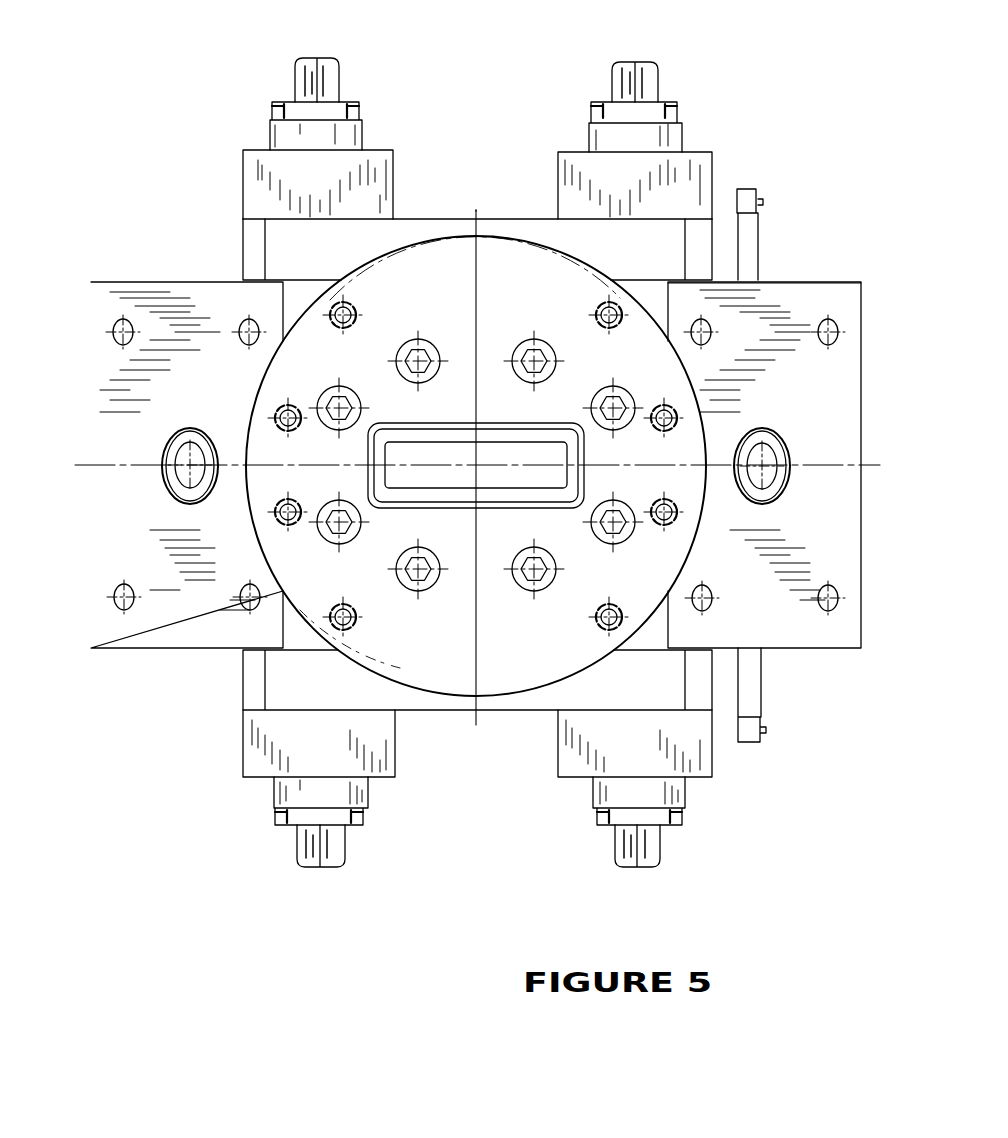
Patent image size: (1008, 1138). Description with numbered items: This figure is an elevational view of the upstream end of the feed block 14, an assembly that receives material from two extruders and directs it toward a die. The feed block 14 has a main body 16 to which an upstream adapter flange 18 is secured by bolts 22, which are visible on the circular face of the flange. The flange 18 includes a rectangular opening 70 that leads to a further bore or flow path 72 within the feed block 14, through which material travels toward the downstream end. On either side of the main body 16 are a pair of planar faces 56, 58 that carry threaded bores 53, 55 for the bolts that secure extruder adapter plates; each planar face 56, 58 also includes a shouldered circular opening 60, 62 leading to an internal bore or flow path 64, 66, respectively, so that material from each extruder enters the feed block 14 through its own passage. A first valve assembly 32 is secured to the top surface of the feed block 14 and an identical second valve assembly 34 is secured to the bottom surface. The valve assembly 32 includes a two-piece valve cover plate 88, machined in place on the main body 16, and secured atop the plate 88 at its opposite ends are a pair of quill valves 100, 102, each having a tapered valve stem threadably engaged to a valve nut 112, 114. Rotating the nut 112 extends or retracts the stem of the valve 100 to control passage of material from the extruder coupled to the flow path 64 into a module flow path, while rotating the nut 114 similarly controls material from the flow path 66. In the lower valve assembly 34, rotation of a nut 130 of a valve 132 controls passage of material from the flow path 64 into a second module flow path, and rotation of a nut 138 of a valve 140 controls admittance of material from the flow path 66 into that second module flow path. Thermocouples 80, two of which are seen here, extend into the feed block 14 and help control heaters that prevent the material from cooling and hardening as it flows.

The feed block 14 is at (481, 136).
The main body 16 is at (812, 292).
The upstream adapter flange 18 is at (700, 442).
The bolts 22 is at (425, 342).
The first valve assembly 32 is at (252, 235).
The second valve assembly 34 is at (256, 687).
The threaded bores 53 is at (113, 326).
The threaded bores 55 is at (712, 332).
The planar face 56 is at (160, 282).
The planar face 58 is at (853, 298).
The shouldered circular opening 60 is at (187, 440).
The shouldered circular opening 62 is at (768, 432).
The flow path 64 is at (203, 450).
The flow path 66 is at (776, 465).
The rectangular opening 70 is at (555, 460).
The flow path 72 is at (481, 445).
The thermocouples 80 is at (757, 238).
The valve cover plate 88 is at (440, 222).
The quill valve 100 is at (318, 68).
The quill valve 102 is at (635, 68).
The valve nut 112 is at (330, 72).
The valve nut 114 is at (612, 82).
The nut 130 is at (300, 850).
The valve 132 is at (331, 867).
The nut 138 is at (614, 852).
The valve 140 is at (634, 866).